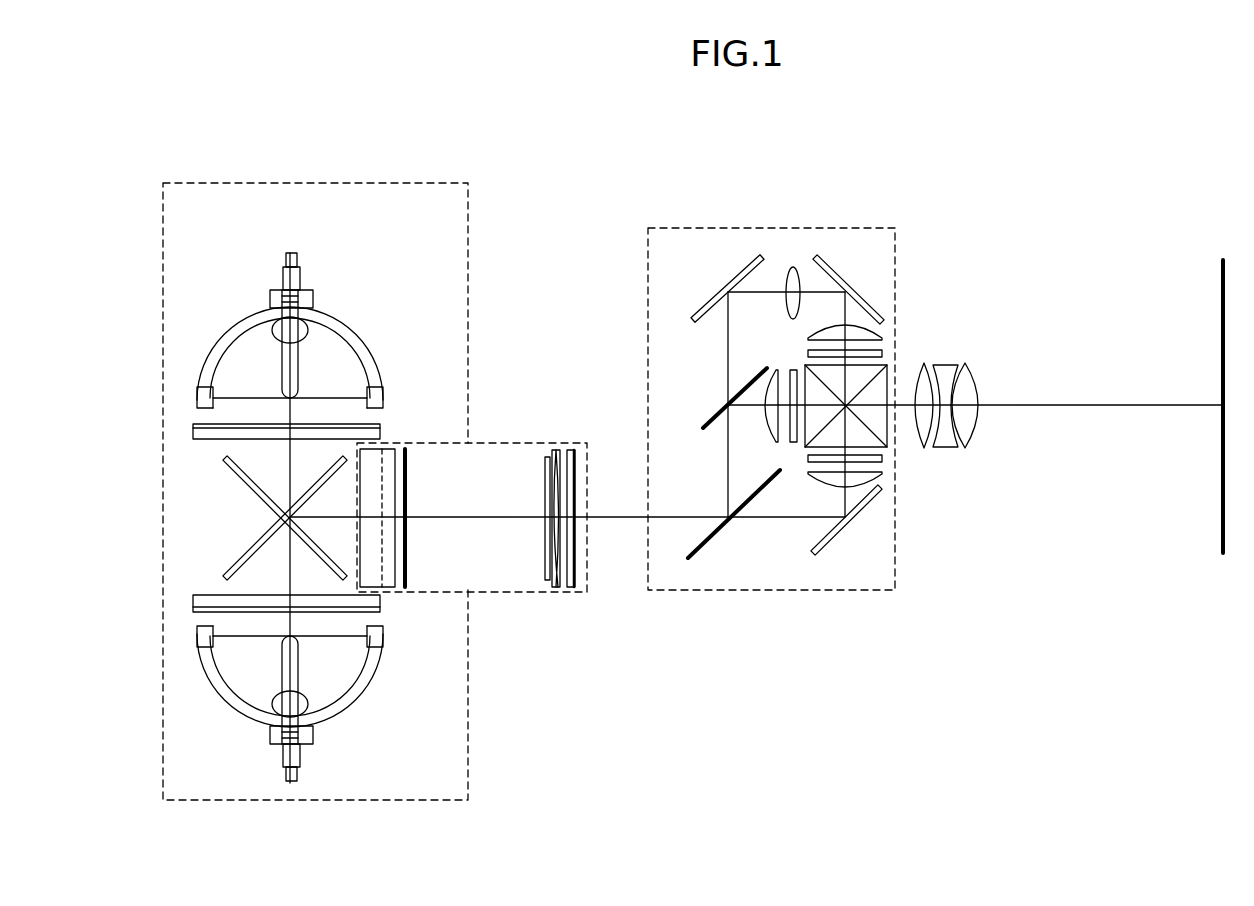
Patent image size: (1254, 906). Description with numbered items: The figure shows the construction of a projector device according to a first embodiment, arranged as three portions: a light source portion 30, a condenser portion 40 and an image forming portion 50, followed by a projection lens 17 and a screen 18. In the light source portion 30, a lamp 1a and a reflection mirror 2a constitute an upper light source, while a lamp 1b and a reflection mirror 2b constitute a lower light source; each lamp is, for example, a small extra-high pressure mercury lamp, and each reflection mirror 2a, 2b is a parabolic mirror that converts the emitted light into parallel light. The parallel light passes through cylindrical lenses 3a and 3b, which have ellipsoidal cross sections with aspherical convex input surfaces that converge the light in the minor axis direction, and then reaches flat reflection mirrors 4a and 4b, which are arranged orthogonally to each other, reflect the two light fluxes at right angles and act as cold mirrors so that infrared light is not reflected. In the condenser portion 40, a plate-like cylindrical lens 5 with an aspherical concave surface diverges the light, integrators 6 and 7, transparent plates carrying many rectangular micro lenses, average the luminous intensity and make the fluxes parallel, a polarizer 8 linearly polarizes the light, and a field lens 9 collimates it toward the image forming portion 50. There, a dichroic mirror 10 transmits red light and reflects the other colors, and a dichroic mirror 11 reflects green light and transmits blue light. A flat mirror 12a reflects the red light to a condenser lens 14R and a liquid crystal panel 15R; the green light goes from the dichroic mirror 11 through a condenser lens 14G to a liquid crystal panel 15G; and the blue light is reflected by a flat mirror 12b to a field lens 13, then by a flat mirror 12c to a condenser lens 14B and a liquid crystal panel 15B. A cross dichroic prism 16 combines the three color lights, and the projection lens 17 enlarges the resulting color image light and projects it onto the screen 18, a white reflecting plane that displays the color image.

The lamp 1a is at (298, 364).
The lamp 1b is at (298, 700).
The reflection mirror 2a is at (329, 314).
The reflection mirror 2b is at (345, 712).
The cylindrical lens 3a is at (205, 440).
The cylindrical lens 3b is at (205, 593).
The reflection mirror 4a is at (240, 474).
The reflection mirror 4b is at (246, 557).
The cylindrical lens 5 is at (383, 450).
The integrator 6 is at (408, 474).
The integrator 7 is at (548, 456).
The polarizer 8 is at (556, 590).
The field lens 9 is at (574, 456).
The dichroic mirror 10 is at (705, 550).
The dichroic mirror 11 is at (706, 420).
The flat mirror 12a is at (839, 540).
The flat mirror 12b is at (728, 283).
The flat mirror 12c is at (838, 278).
The field lens 13 is at (793, 268).
The condenser lens 14G is at (766, 370).
The condenser lens 14B is at (885, 328).
The condenser lens 14R is at (823, 480).
The liquid crystal panel 15G is at (792, 370).
The liquid crystal panel 15B is at (885, 352).
The liquid crystal panel 15R is at (888, 460).
The cross dichroic prism 16 is at (888, 370).
The projection lens 17 is at (978, 378).
The screen 18 is at (1220, 292).
The light source portion 30 is at (468, 745).
The condenser portion 40 is at (508, 592).
The image forming portion 50 is at (710, 592).